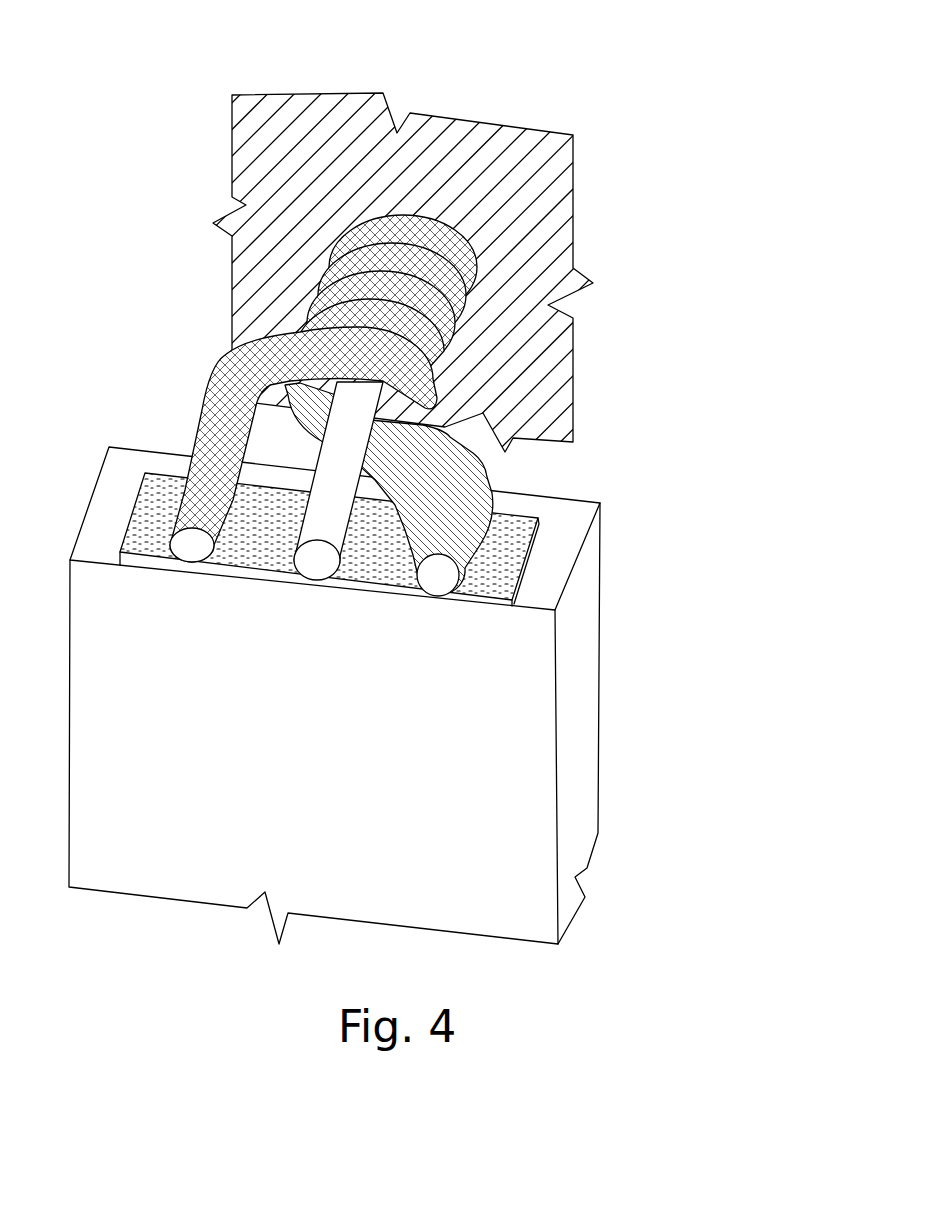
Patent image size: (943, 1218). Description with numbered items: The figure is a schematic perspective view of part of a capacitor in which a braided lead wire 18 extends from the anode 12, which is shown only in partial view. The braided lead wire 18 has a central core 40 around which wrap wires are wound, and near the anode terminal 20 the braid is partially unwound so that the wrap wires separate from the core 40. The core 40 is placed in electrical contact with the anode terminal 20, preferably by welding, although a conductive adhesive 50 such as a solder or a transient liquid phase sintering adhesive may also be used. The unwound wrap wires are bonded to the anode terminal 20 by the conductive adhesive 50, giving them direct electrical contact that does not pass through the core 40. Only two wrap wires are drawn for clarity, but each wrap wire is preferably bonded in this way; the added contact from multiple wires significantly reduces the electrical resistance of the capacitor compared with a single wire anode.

The anode 12 is at (462, 147).
The braided lead wire 18 is at (484, 258).
The anode terminal 20 is at (510, 808).
The core 40 is at (317, 562).
The conductive adhesive 50 is at (150, 533).